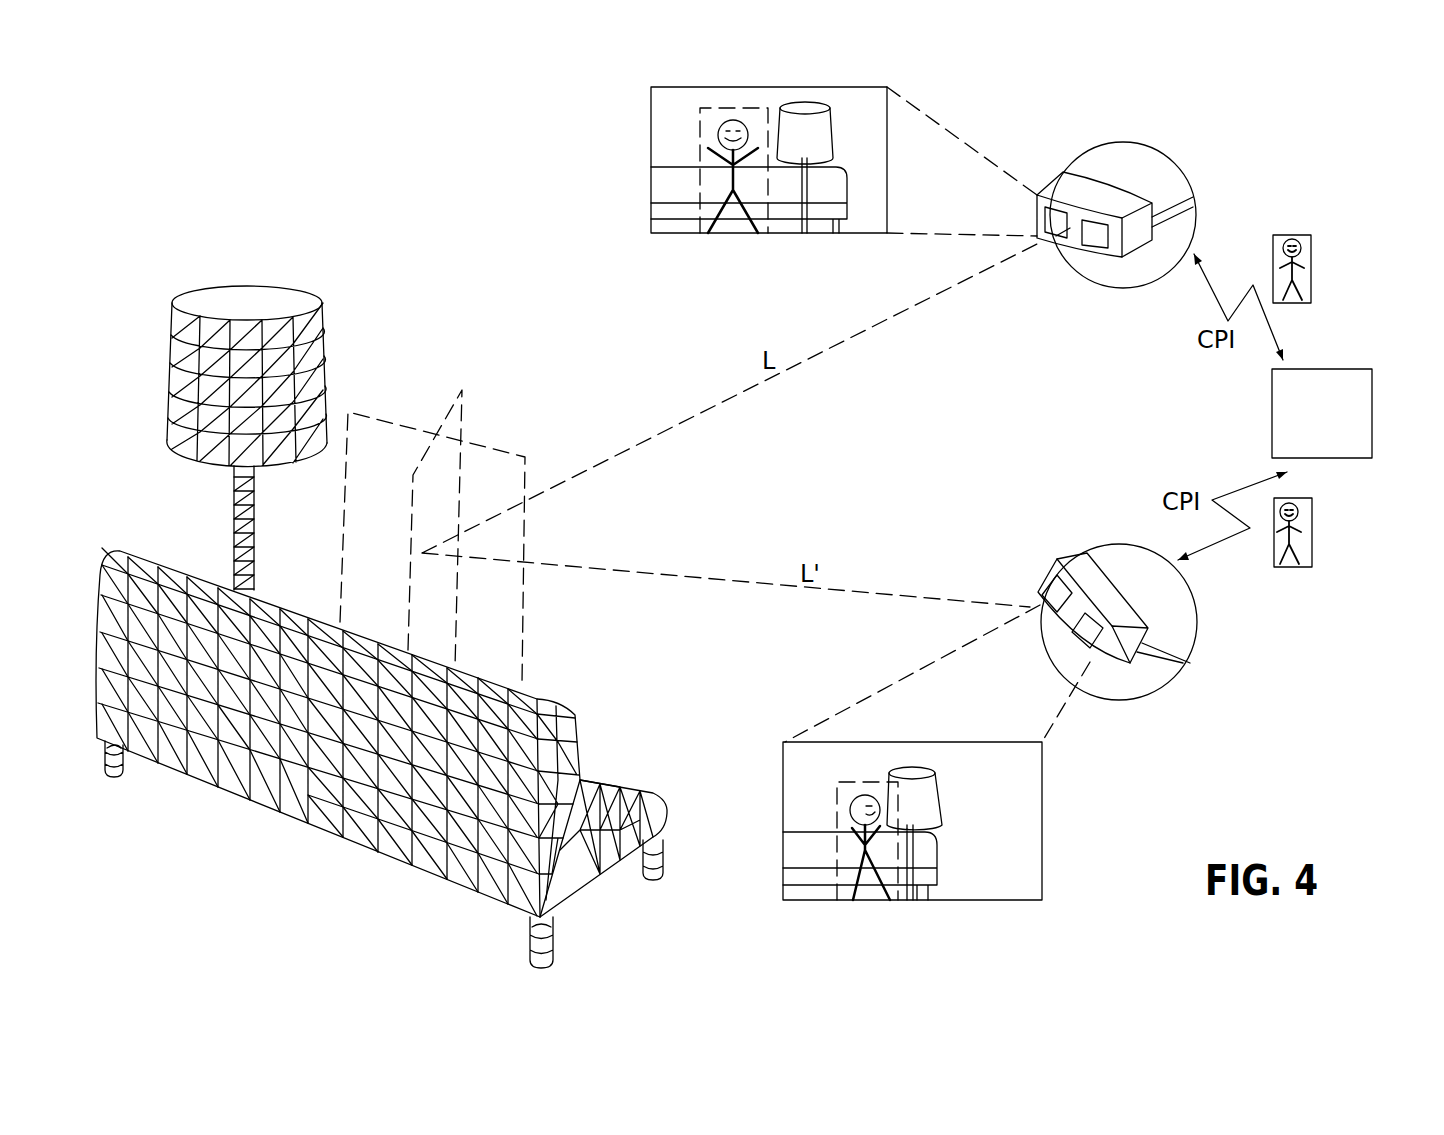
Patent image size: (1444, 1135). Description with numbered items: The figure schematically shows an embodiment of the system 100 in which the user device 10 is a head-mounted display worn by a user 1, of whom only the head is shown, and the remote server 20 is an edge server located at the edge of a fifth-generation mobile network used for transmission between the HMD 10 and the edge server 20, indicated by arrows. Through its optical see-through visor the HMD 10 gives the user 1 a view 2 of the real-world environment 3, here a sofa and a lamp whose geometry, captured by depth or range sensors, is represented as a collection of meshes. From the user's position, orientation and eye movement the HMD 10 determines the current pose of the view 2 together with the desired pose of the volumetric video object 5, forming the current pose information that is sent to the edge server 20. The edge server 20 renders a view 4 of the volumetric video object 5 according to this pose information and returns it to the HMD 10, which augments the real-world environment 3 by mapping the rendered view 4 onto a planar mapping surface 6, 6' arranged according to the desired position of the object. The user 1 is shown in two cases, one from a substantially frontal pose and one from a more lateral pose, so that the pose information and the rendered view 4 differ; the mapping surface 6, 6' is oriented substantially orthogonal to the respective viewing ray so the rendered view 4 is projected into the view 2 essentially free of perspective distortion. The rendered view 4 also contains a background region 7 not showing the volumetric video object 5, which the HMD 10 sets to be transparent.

The system 100 is at (302, 146).
The user 1 is at (1195, 200).
The view of the real-world environment 2 is at (651, 122).
The real-world environment 3 is at (141, 545).
The rendered view of the volumetric video object 4 is at (731, 238).
The volumetric video object 5 is at (733, 177).
The planar mapping surface 6 is at (554, 368).
The planar mapping surface 6' is at (653, 606).
The background region 7 is at (1306, 290).
The user device (head-mounted display) 10 is at (1037, 213).
The remote server (edge server) 20 is at (1372, 430).